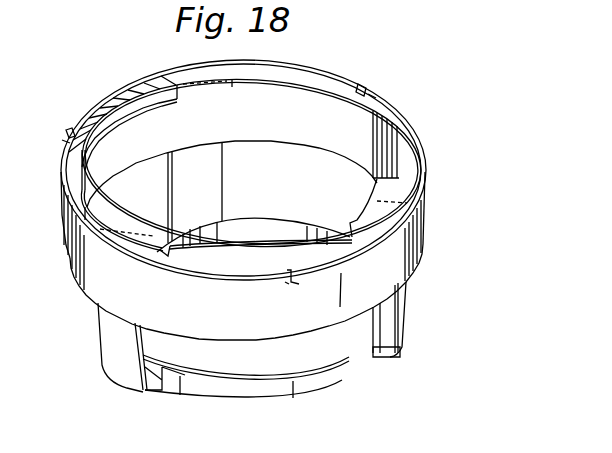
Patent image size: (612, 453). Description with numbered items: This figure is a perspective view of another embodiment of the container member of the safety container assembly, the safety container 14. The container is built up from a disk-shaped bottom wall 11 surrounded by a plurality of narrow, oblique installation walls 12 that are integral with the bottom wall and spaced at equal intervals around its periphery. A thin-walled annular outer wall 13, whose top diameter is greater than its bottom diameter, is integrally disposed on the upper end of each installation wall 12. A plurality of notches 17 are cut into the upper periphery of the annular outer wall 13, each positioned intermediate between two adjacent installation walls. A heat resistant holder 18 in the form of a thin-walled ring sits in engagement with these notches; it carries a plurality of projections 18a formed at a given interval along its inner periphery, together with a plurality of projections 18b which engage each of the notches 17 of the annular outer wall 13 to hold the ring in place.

The bottom wall 11 is at (346, 364).
The installation wall 12 is at (108, 338).
The annular outer wall 13 is at (400, 246).
The safety container 14 is at (430, 170).
The notch 17 is at (70, 129).
The heat resistant holder 18 is at (314, 72).
The projection 18a is at (229, 93).
The projection 18b is at (64, 141).